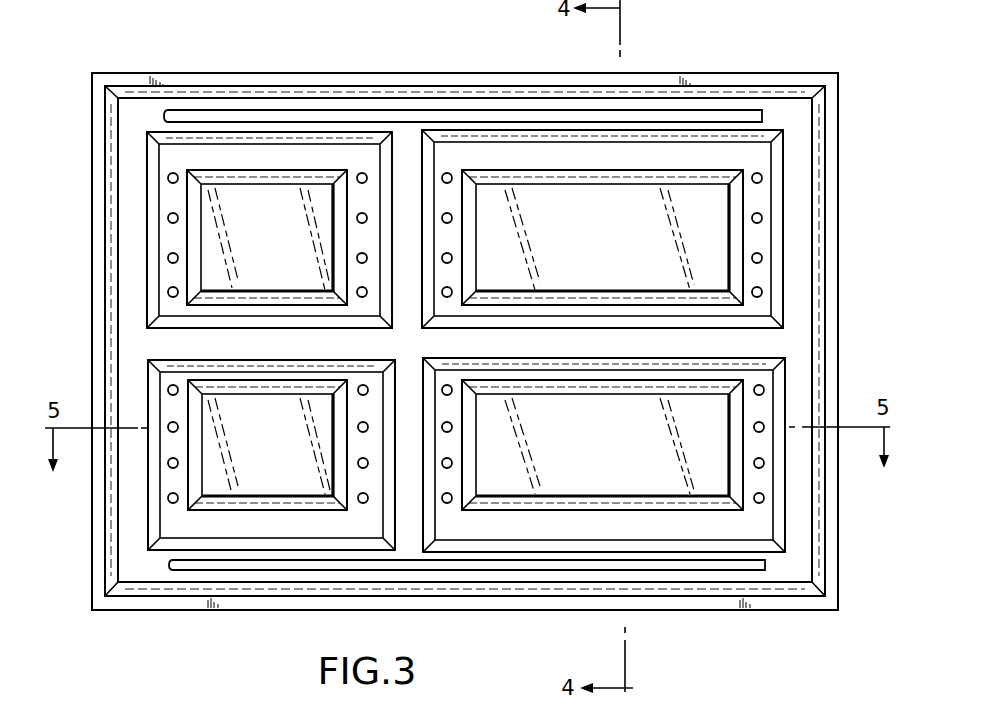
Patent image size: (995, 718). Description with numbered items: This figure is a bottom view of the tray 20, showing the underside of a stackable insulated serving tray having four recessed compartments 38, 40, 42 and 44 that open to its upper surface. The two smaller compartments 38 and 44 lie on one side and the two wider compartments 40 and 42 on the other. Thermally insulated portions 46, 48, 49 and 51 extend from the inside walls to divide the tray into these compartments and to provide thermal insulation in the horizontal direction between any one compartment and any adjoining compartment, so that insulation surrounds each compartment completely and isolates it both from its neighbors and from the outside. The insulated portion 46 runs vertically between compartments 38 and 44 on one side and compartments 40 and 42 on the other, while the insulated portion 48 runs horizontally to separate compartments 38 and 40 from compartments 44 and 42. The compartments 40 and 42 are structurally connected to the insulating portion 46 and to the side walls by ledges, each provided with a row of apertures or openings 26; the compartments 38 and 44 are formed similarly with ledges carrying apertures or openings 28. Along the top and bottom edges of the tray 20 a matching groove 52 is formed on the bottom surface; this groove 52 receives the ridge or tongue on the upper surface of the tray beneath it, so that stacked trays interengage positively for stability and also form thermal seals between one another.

The tray 20 is at (842, 253).
The apertures or openings 26 is at (762, 177).
The apertures or openings 28 is at (359, 174).
The compartment 38 is at (252, 465).
The compartment 40 is at (590, 465).
The compartment 42 is at (590, 258).
The compartment 44 is at (254, 258).
The thermally insulated portion 46 is at (408, 147).
The thermally insulated portion 48 is at (767, 340).
The thermally insulated portion 49 is at (680, 105).
The thermally insulated portion 51 is at (805, 512).
The groove 52 is at (748, 112).